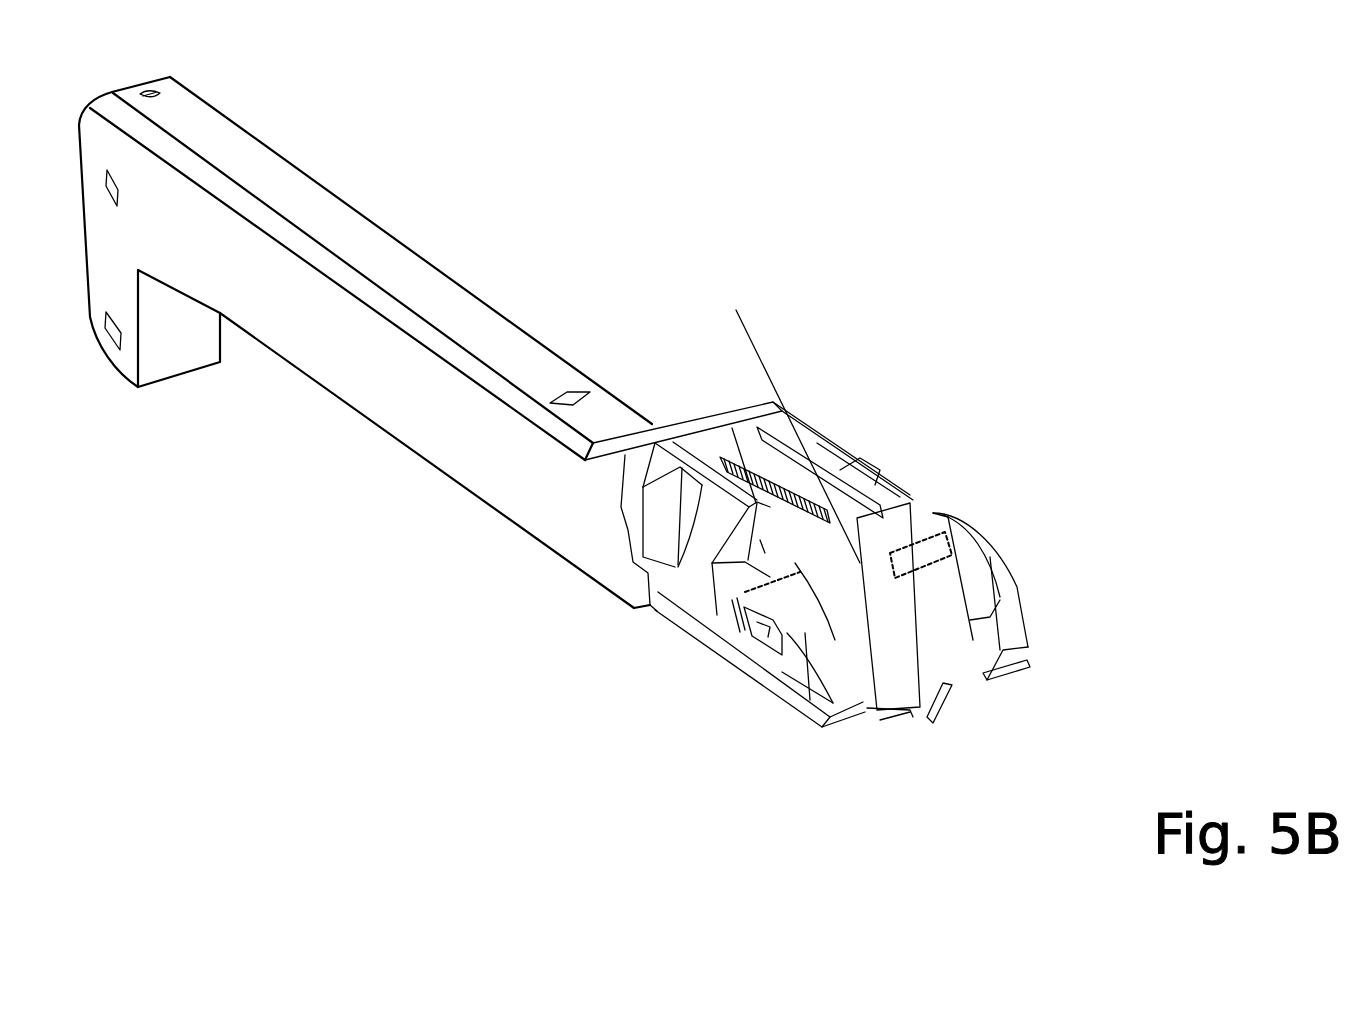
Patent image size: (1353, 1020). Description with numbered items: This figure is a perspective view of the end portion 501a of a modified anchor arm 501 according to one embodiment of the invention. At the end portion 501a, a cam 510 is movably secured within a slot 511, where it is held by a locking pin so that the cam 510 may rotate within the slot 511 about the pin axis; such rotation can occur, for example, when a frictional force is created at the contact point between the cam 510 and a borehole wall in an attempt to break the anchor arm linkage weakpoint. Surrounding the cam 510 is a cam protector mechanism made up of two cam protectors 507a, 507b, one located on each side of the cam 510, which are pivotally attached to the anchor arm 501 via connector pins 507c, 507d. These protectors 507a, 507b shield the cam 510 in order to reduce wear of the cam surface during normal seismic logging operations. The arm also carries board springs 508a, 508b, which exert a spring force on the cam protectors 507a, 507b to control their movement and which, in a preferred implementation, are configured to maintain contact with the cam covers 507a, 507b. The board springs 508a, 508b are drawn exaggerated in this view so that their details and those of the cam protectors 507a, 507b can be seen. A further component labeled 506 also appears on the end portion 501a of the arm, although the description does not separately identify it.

The anchor arm 501 is at (357, 208).
The end portion 501a is at (1006, 412).
The rail 506 is at (760, 458).
The cam protector 507a is at (993, 540).
The cam protector 507b is at (777, 675).
The connector pin 507c is at (912, 557).
The connector pin 507d is at (715, 625).
The board spring 508a is at (1017, 670).
The board spring 508b is at (838, 735).
The cam 510 is at (960, 685).
The slot 511 is at (736, 310).